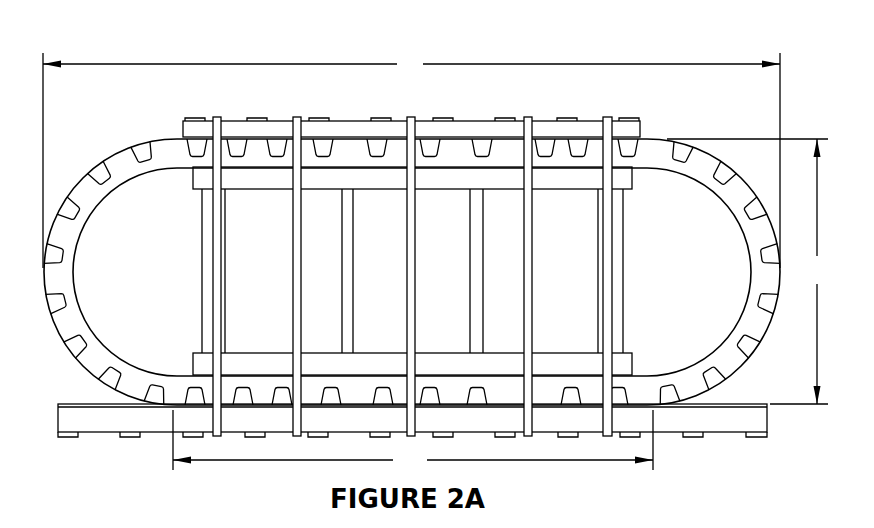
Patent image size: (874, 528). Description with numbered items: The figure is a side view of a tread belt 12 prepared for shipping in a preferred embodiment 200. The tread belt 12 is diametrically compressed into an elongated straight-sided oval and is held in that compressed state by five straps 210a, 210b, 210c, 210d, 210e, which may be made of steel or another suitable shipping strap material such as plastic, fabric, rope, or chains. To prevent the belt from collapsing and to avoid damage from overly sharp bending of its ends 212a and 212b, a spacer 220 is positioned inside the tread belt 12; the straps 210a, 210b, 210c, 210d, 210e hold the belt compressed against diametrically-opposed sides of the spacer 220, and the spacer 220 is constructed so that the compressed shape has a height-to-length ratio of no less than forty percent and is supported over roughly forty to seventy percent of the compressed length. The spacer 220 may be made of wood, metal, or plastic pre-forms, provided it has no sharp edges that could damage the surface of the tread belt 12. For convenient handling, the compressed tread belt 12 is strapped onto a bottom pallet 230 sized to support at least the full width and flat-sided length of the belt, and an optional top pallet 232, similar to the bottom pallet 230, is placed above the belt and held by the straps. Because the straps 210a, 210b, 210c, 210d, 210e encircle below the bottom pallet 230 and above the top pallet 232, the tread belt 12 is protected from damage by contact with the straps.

The preferred embodiment 200 is at (594, 40).
The tread belt 12 is at (733, 142).
The end of tread belt 212a is at (44, 277).
The end of tread belt 212b is at (781, 272).
The spacer 220 is at (193, 174).
The top pallet 232 is at (640, 130).
The bottom pallet 230 is at (767, 420).
The strap 210a is at (217, 117).
The strap 210b is at (297, 117).
The strap 210c is at (411, 117).
The strap 210d is at (528, 117).
The strap 210e is at (612, 95).